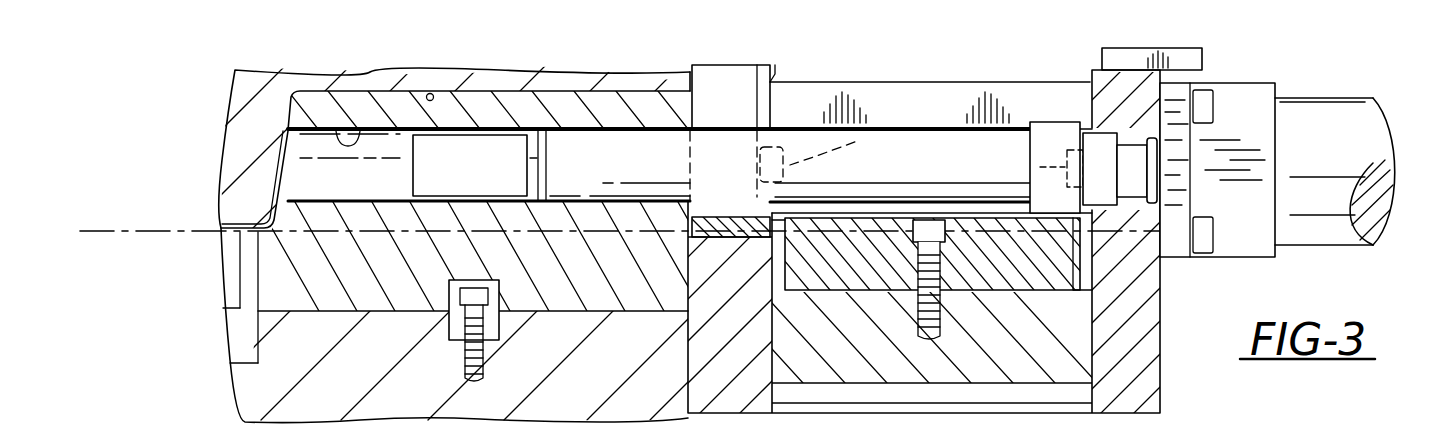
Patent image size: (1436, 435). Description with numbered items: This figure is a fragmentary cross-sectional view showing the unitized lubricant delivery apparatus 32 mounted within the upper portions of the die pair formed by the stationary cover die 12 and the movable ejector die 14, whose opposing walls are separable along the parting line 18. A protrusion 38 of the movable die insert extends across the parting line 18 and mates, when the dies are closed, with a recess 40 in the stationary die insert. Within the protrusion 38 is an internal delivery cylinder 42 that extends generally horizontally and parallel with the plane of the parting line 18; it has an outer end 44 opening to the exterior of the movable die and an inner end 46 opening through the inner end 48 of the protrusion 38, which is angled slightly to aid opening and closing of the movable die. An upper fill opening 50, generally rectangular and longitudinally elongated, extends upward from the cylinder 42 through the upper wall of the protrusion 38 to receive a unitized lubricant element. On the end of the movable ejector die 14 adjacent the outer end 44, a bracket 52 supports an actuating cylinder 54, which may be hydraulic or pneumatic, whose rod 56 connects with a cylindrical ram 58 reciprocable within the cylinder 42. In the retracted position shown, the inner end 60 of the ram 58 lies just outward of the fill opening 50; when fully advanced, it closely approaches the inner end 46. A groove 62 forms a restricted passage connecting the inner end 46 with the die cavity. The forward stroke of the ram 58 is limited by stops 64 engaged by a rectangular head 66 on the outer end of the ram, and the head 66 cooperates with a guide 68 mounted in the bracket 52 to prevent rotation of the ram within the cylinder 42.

The stationary cover die 12 is at (268, 93).
The movable ejector die 14 is at (242, 392).
The parting line 18 is at (178, 233).
The unitized lubricant delivery apparatus 32 is at (776, 80).
The protrusion 38 is at (513, 91).
The recess 40 is at (438, 92).
The delivery cylinder 42 is at (346, 146).
The outer end 44 is at (773, 137).
The inner end 46 is at (290, 160).
The inner end of the protrusion 48 is at (290, 118).
The upper fill opening 50 is at (457, 140).
The bracket 52 is at (768, 412).
The actuating cylinder 54 is at (1348, 118).
The rod 56 is at (1157, 160).
The ram 58 is at (650, 148).
The inner end of the ram 60 is at (542, 151).
The groove 62 is at (276, 187).
The stops 64 is at (860, 140).
The rectangular head 66 is at (1053, 133).
The guide 68 is at (978, 205).